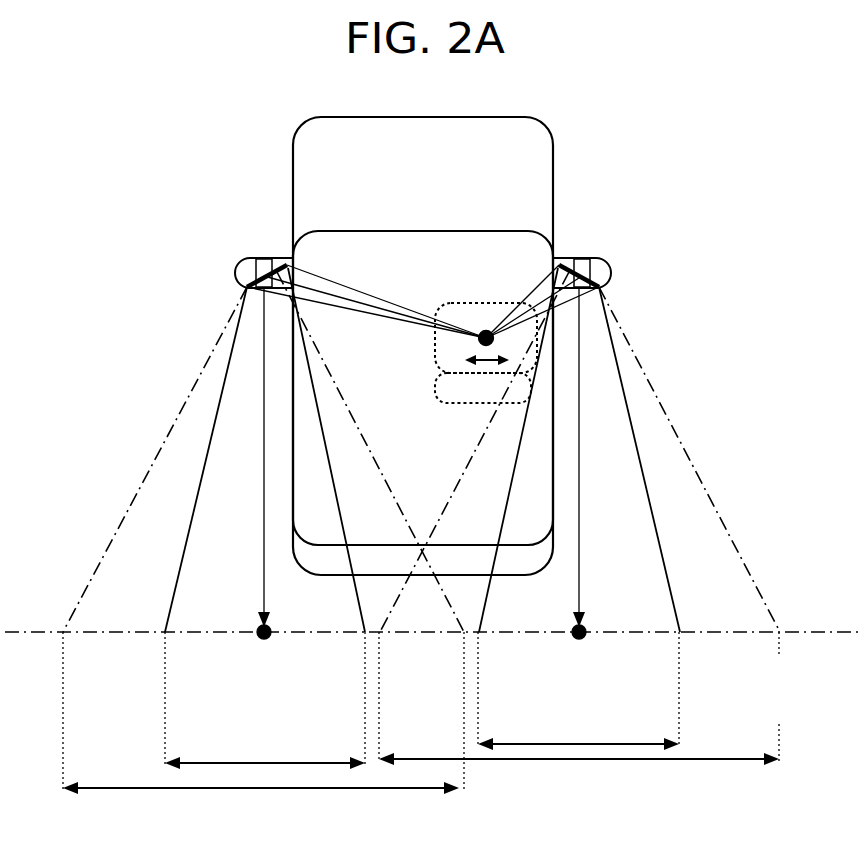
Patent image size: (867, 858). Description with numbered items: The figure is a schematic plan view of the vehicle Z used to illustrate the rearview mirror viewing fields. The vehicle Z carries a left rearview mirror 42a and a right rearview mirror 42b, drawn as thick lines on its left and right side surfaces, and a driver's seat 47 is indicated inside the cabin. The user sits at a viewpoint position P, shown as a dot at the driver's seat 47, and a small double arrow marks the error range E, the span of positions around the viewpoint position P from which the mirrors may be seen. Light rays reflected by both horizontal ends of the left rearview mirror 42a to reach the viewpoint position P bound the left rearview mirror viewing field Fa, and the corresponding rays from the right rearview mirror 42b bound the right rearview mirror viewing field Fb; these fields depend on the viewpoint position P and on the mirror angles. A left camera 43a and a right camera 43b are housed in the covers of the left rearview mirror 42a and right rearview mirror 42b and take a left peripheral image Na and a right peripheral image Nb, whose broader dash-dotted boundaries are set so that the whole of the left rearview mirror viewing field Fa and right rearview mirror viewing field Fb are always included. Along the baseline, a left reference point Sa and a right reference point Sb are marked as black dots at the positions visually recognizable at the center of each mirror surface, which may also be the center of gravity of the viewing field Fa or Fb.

The vehicle Z is at (356, 117).
The driver's seat 47 is at (452, 303).
The viewpoint position P is at (486, 330).
The error range E is at (493, 350).
The left rearview mirror 42a is at (242, 268).
The right rearview mirror 42b is at (595, 268).
The left camera 43a is at (272, 259).
The right camera 43b is at (572, 259).
The left reference point Sa is at (258, 625).
The right reference point Sb is at (584, 625).
The left rearview mirror viewing field Fa is at (265, 518).
The right rearview mirror viewing field Fb is at (579, 509).
The left peripheral image Na is at (263, 546).
The right peripheral image Nb is at (579, 533).